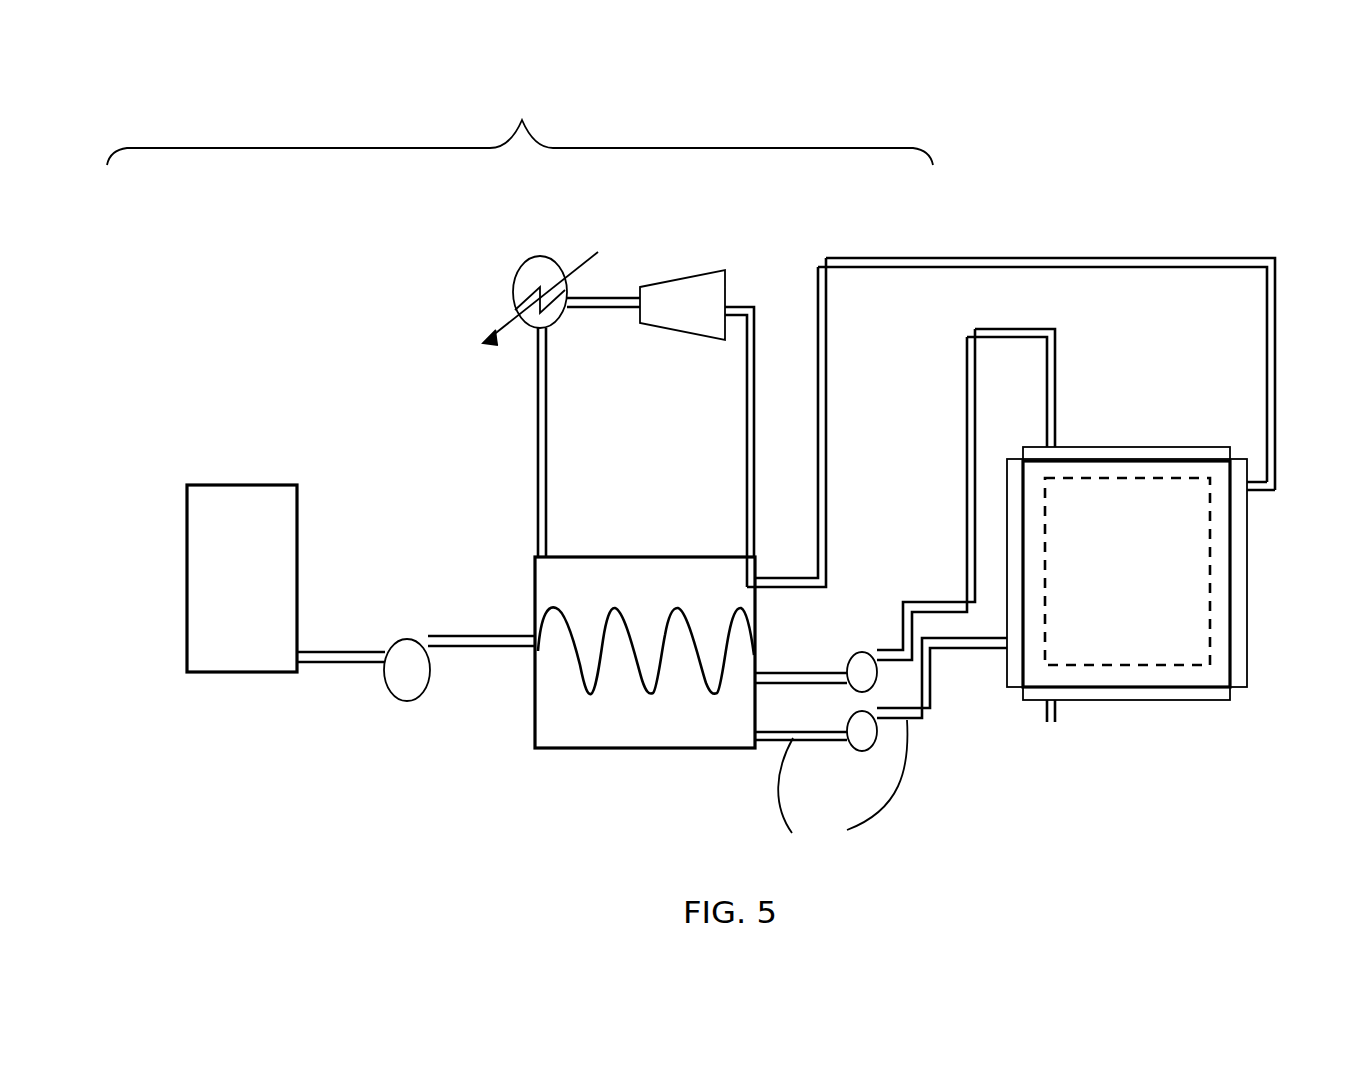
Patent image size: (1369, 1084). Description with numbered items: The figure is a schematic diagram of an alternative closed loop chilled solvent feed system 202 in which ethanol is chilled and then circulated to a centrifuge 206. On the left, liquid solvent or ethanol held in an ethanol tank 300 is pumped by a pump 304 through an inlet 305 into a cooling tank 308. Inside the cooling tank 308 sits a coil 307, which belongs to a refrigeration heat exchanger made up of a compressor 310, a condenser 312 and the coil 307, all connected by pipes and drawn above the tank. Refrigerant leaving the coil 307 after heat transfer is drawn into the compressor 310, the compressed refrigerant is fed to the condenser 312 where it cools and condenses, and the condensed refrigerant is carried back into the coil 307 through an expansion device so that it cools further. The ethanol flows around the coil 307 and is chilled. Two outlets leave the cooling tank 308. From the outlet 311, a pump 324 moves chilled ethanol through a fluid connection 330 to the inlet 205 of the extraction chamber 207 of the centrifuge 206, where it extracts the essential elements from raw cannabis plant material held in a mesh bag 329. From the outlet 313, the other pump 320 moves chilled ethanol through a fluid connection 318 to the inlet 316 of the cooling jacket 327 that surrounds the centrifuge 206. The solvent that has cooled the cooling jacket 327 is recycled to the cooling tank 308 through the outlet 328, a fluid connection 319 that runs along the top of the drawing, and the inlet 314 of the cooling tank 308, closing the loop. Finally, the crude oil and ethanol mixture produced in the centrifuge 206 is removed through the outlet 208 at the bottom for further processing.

The closed loop chilled solvent feed system 202 is at (520, 117).
The inlet 205 is at (1055, 433).
The centrifuge 206 is at (1133, 445).
The extraction chamber 207 is at (1097, 461).
The outlet 208 is at (1052, 707).
The ethanol tank 300 is at (185, 577).
The pump 304 is at (397, 697).
The inlet 305 is at (513, 633).
The coil 307 is at (552, 687).
The cooling tank 308 is at (647, 748).
The compressor 310 is at (696, 275).
The outlet 311 is at (772, 673).
The condenser 312 is at (523, 255).
The outlet 313 is at (770, 743).
The inlet 314 is at (765, 570).
The inlet 316 is at (992, 650).
The fluid connection 318 is at (842, 785).
The fluid connection 319 is at (1118, 260).
The pump 320 is at (853, 750).
The pump 324 is at (853, 652).
The cooling jacket 327 is at (1248, 567).
The outlet 328 is at (1253, 492).
The mesh bag 329 is at (1168, 667).
The fluid connection 330 is at (818, 672).